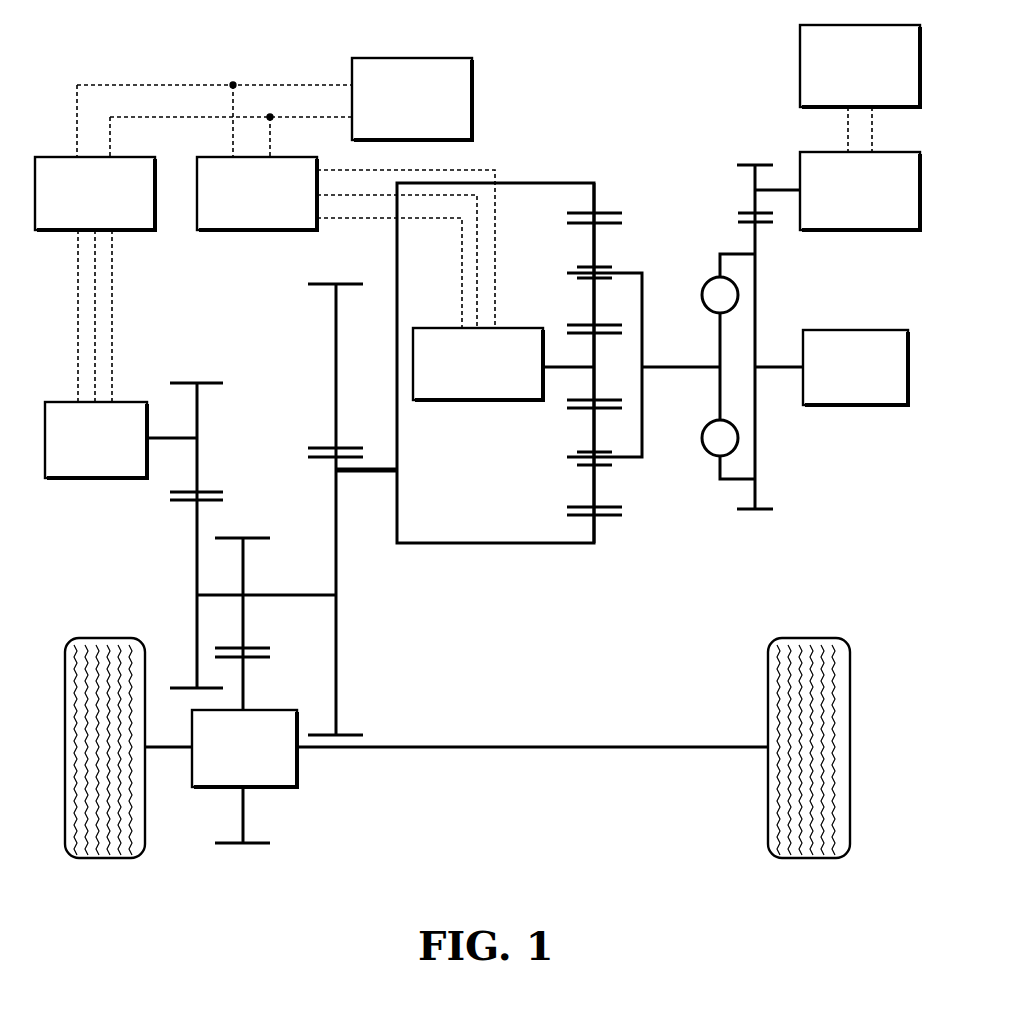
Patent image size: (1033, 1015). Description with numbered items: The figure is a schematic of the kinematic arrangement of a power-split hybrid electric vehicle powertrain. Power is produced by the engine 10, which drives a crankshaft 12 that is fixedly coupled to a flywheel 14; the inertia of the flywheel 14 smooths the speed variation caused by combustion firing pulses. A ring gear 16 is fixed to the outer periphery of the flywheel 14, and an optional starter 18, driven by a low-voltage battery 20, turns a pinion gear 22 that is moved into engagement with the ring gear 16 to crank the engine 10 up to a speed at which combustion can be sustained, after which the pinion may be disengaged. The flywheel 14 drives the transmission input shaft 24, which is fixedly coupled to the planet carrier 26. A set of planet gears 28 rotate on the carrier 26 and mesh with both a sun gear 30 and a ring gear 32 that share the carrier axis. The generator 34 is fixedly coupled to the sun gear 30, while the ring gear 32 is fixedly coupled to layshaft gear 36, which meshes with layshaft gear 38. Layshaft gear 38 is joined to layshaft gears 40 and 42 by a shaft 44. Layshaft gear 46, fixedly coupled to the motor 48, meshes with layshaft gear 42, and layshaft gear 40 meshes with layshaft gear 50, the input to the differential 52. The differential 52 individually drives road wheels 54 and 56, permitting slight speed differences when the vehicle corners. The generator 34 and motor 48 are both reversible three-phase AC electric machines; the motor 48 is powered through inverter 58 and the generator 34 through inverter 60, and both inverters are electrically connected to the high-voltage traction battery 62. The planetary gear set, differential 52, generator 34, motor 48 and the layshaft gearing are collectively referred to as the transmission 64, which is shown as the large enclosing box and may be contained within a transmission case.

The engine 10 is at (858, 330).
The crankshaft 12 is at (778, 368).
The flywheel 14 is at (758, 466).
The ring gear 16 is at (758, 237).
The starter 18 is at (825, 152).
The low-voltage battery 20 is at (860, 25).
The pinion gear 22 is at (750, 205).
The transmission input shaft 24 is at (703, 366).
The planet carrier 26 is at (702, 296).
The planet gears 28 is at (594, 483).
The sun gear 30 is at (594, 353).
The ring gear 32 is at (594, 530).
The generator 34 is at (487, 400).
The layshaft gear 36 is at (336, 367).
The layshaft gear 38 is at (336, 668).
The layshaft gear 40 is at (243, 583).
The layshaft gear 42 is at (195, 553).
The shaft 44 is at (258, 597).
The layshaft gear 46 is at (197, 428).
The motor 48 is at (70, 402).
The layshaft gear 50 is at (243, 800).
The differential 52 is at (258, 710).
The road wheel 54 is at (100, 638).
The road wheel 56 is at (805, 638).
The inverter 58 is at (68, 232).
The inverter 60 is at (260, 232).
The high-voltage traction battery 62 is at (435, 58).
The transmission 64 is at (500, 568).